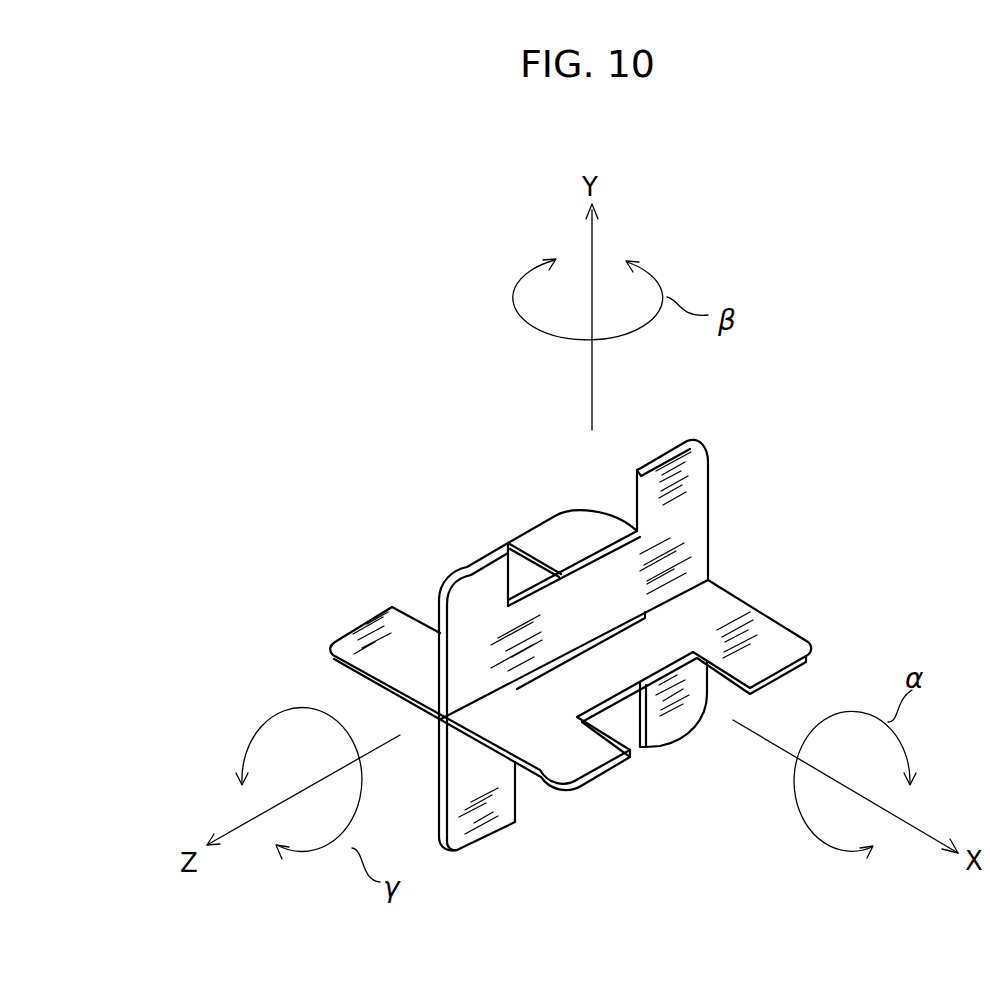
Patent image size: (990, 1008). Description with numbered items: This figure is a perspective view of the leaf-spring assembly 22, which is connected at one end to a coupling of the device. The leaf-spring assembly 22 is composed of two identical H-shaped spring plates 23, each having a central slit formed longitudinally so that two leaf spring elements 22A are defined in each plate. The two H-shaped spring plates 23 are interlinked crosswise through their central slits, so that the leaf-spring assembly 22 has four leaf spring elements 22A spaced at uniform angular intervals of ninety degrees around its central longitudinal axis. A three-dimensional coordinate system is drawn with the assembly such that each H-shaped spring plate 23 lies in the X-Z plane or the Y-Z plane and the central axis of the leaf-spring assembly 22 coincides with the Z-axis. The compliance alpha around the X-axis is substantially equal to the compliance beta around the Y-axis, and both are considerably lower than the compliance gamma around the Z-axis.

The leaf-spring assembly 22 is at (570, 654).
The leaf spring element 22A is at (583, 602).
The H-shaped spring plate 23 is at (711, 512).